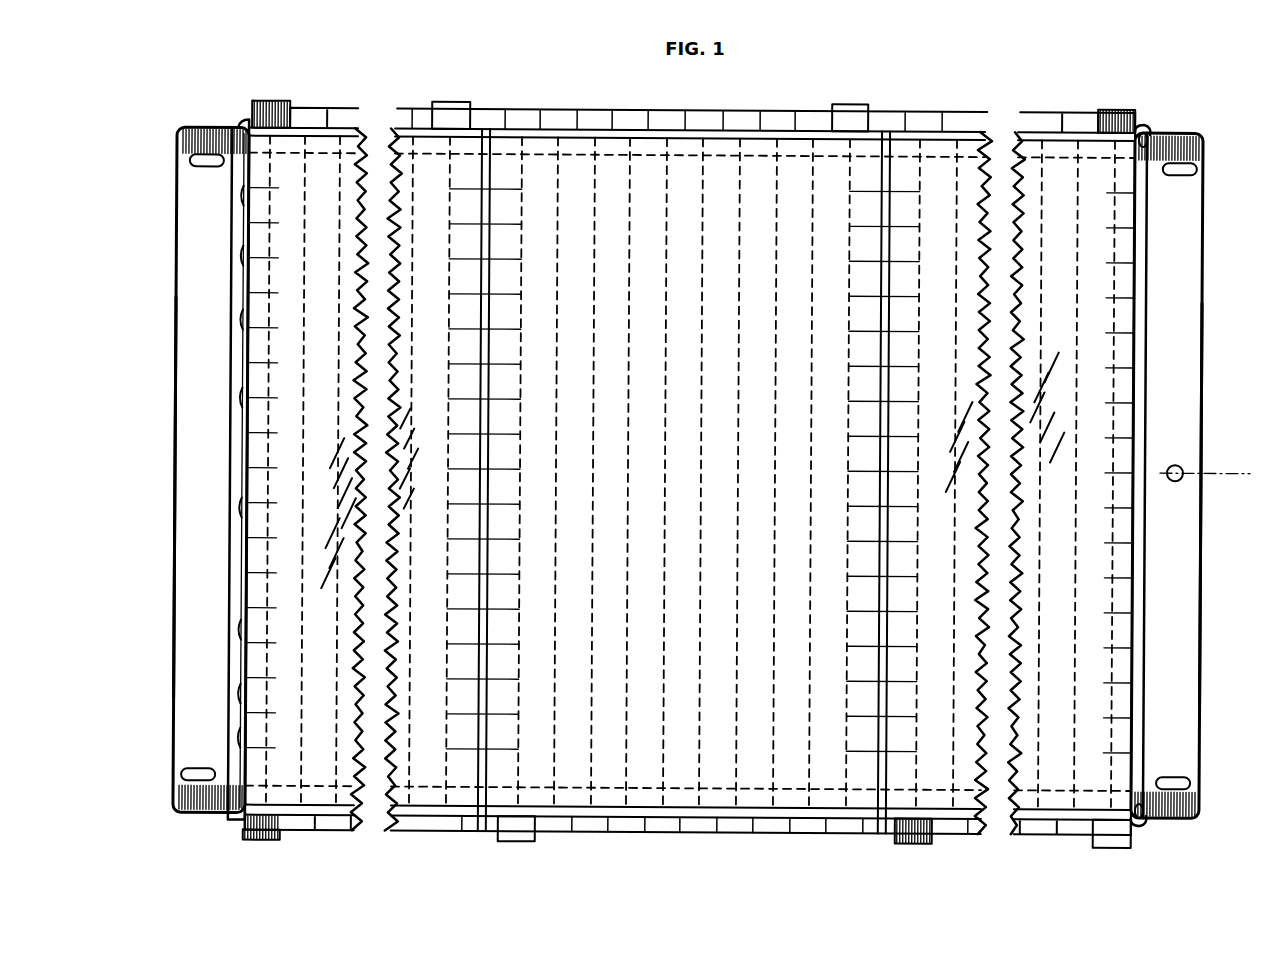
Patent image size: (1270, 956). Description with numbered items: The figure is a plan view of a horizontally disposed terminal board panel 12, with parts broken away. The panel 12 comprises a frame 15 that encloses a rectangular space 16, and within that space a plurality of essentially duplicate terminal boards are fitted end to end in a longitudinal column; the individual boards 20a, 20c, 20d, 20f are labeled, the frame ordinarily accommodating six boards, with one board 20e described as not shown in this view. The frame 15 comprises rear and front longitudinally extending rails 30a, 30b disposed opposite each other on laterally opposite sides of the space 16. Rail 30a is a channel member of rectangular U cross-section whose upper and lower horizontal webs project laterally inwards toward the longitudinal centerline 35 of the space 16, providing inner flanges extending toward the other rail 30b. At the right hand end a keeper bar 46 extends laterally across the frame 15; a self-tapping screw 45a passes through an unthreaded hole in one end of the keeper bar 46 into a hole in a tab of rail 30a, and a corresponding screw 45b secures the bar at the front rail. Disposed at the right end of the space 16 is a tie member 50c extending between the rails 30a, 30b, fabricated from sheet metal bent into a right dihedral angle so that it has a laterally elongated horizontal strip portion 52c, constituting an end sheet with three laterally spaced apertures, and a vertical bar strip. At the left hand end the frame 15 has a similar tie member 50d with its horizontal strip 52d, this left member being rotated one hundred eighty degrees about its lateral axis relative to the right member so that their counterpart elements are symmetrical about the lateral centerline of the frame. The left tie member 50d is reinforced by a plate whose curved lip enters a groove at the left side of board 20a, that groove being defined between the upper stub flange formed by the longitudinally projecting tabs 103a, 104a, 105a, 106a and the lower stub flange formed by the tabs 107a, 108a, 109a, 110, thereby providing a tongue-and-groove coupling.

The terminal board panel 12 is at (661, 868).
The frame 15 is at (243, 126).
The rectangular space 16 is at (384, 150).
The terminal board 20a is at (326, 170).
The terminal board 20c is at (580, 172).
The terminal board 20d is at (935, 176).
The terminal board 20e is at (1003, 180).
The terminal board 20f is at (1060, 186).
The rear rail 30a is at (238, 123).
The front rail 30b is at (232, 820).
The longitudinal centerline 35 is at (1230, 468).
The self-tapping screw 45a is at (1149, 130).
The lower right end cap 45b is at (1150, 822).
The keeper bar 46 is at (1140, 318).
The tie member 50c is at (1222, 697).
The tie member 50d is at (82, 468).
The horizontal strip portion 52c is at (1172, 586).
The horizontal strip portion 52d is at (205, 567).
The tab 103a is at (245, 258).
The tab 104a is at (245, 400).
The tab 105a is at (245, 632).
The tab 106a is at (245, 740).
The tab 107a is at (245, 198).
The tab 108a is at (245, 322).
The tab 109a is at (245, 510).
The tab 110 is at (245, 696).